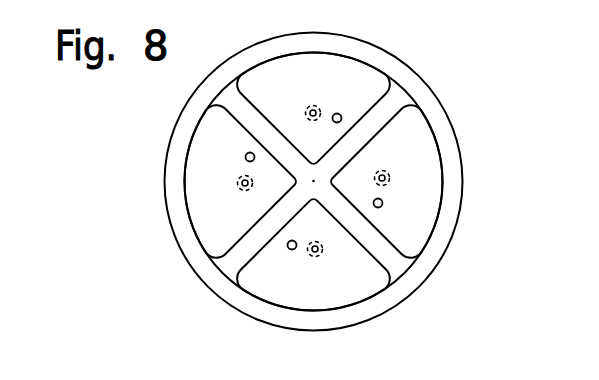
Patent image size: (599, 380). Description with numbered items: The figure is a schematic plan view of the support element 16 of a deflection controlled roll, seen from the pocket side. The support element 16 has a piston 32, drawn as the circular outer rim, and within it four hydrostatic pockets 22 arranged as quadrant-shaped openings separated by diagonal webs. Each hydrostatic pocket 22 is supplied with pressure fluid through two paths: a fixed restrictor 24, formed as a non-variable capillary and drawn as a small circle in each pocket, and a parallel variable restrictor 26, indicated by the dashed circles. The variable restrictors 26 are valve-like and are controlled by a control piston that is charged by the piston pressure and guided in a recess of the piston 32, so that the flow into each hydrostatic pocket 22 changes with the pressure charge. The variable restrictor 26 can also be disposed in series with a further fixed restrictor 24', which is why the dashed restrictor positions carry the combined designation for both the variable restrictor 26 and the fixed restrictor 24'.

The support element 16 is at (452, 113).
The piston 32 is at (448, 194).
The hydrostatic pocket 22 is at (212, 122).
The fixed restrictor 24 is at (252, 240).
The variable restrictor 26 is at (238, 187).
The fixed restrictor 24' is at (314, 181).